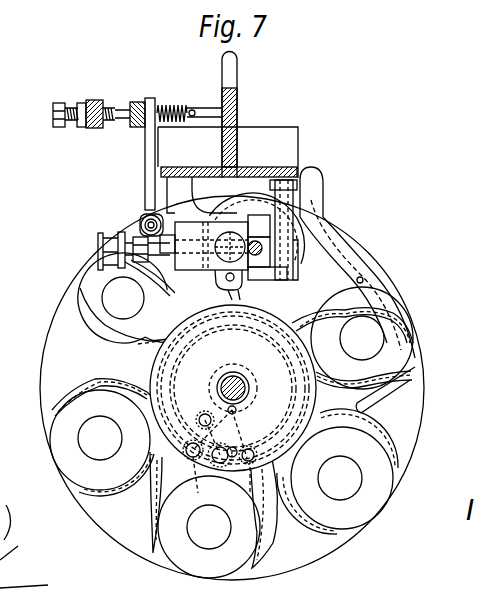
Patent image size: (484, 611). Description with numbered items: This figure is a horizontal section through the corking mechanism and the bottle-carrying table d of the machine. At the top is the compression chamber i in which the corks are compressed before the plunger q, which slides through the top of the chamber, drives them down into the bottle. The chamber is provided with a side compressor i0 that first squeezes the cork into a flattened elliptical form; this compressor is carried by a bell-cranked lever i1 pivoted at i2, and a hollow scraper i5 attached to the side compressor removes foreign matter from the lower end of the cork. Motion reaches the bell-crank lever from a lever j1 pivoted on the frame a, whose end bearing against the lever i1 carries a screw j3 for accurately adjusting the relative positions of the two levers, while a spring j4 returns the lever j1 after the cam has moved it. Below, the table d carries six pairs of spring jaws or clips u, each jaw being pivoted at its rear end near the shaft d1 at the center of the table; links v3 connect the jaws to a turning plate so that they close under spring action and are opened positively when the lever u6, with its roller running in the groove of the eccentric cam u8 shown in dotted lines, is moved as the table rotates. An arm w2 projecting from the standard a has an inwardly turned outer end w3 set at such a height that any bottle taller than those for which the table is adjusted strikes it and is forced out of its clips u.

The lever j1 is at (97, 100).
The screw j3 is at (70, 120).
The spring j4 is at (172, 97).
The frame a is at (238, 107).
The bell-cranked lever i1 is at (147, 176).
The pivot i2 is at (142, 222).
The side compressor i0 is at (227, 220).
The plunger q is at (237, 227).
The arm w2 is at (342, 251).
The spring jaws u is at (397, 306).
The scraper i5 is at (150, 281).
The compression chamber i is at (223, 259).
The shaft d1 is at (242, 382).
The outer end of arm w3 is at (375, 406).
The eccentric cam u8 is at (160, 400).
The arm or lever u6 is at (195, 445).
The table d is at (420, 412).
The links v3 is at (225, 473).